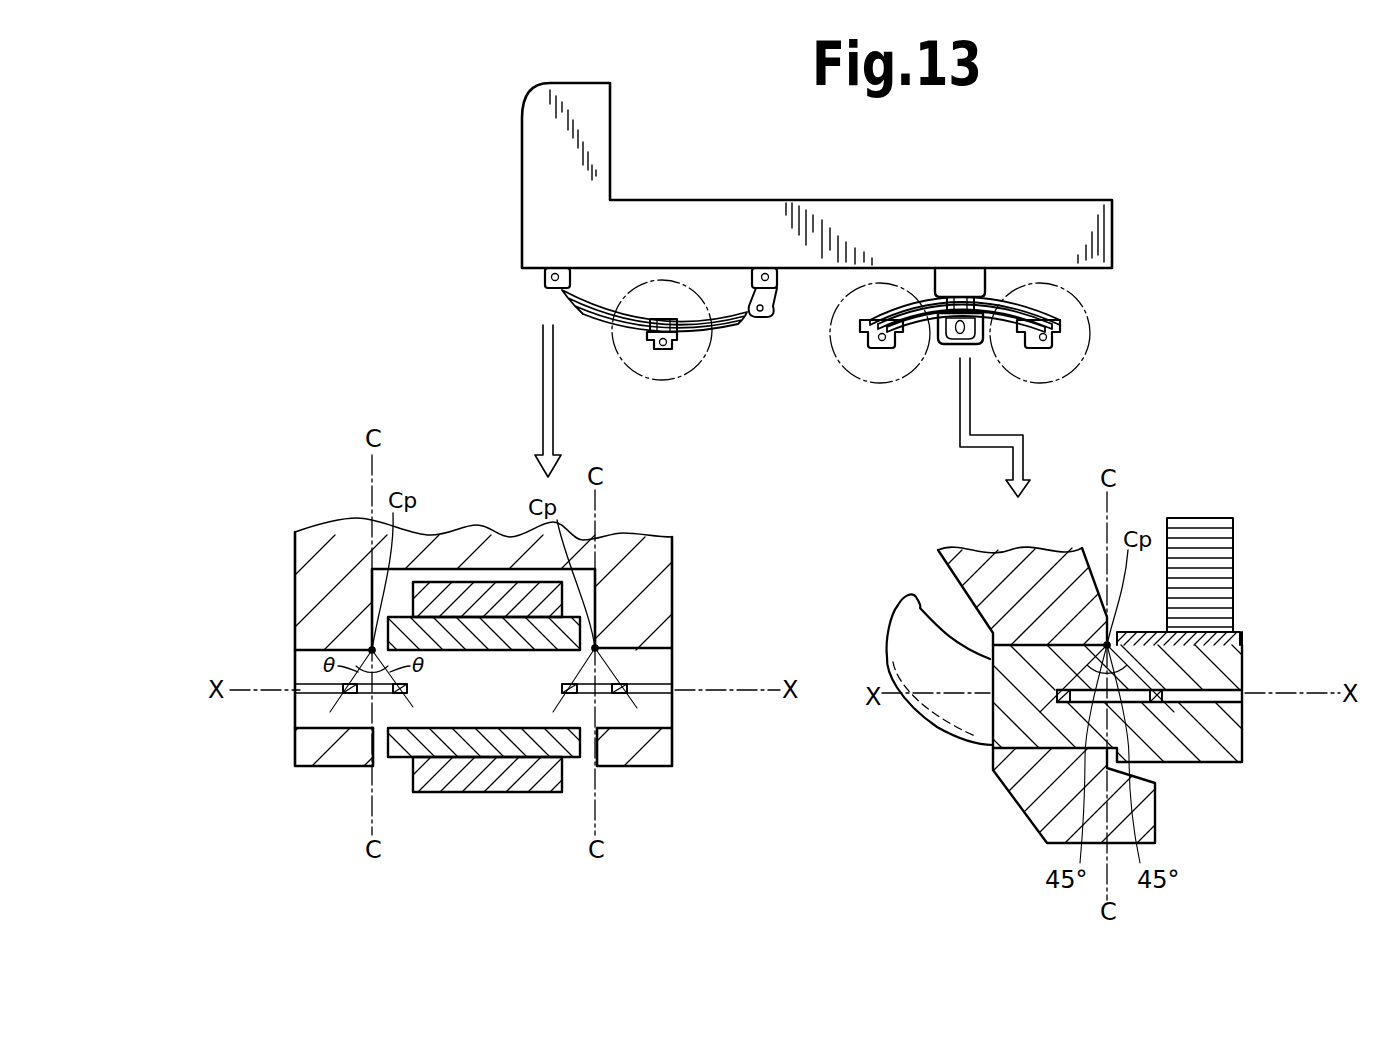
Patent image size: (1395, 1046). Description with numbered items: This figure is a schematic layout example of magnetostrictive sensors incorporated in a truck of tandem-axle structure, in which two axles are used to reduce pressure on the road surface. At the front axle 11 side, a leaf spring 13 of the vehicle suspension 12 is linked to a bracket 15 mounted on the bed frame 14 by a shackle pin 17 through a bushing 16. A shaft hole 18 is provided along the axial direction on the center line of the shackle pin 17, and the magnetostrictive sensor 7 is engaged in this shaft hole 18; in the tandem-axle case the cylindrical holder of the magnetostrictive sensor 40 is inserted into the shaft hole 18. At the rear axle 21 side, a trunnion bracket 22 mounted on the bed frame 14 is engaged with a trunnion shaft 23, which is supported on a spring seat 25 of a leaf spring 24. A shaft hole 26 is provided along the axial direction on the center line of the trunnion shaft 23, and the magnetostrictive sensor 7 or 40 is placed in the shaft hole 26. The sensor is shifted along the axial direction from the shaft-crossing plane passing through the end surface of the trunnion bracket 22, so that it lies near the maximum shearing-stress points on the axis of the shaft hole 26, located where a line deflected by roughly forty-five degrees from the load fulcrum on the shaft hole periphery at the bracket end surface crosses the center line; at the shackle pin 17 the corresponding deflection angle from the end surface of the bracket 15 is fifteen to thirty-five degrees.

The magnetostrictive sensor 7 is at (350, 694).
The front axle 11 is at (663, 346).
The suspension 12 is at (729, 342).
The leaf spring 13 is at (720, 300).
The bed frame 14 is at (827, 230).
The bracket 15 is at (567, 270).
The bushing 16 is at (500, 740).
The shackle pin 17 is at (547, 278).
The shaft hole 18 is at (305, 684).
The rear axle 21 is at (862, 335).
The trunnion bracket 22 is at (963, 280).
The trunnion shaft 23 is at (1040, 827).
The leaf spring 24 is at (926, 297).
The spring seat 25 is at (1233, 635).
The shaft hole 26 is at (1223, 694).
The magnetostrictive sensor 40 is at (400, 694).